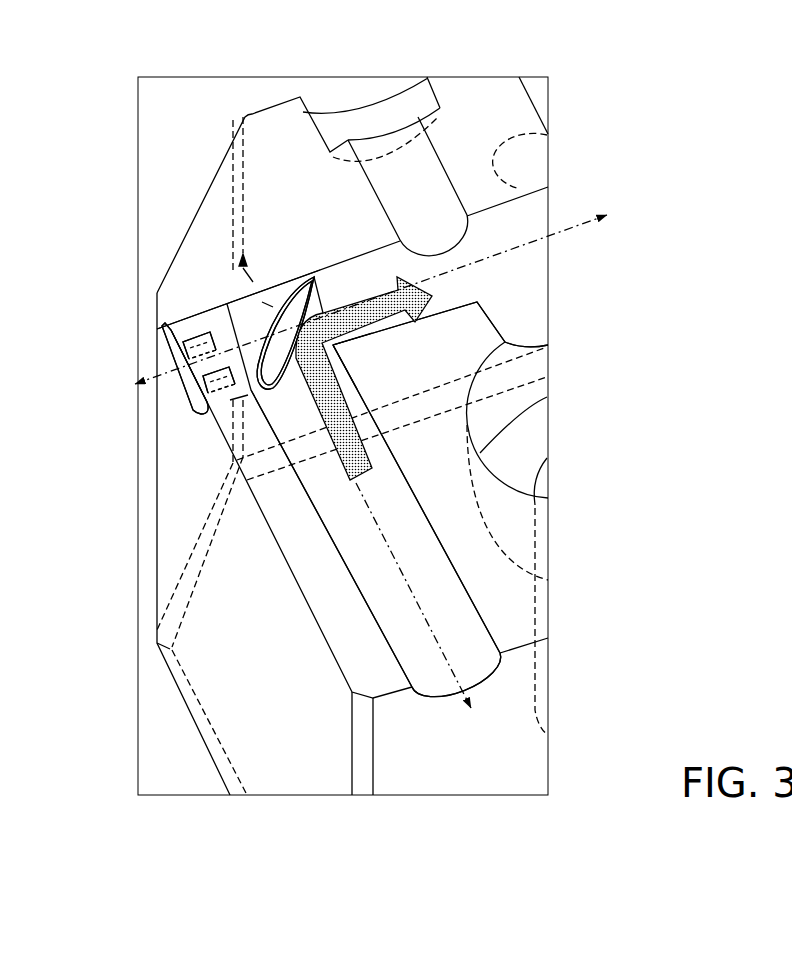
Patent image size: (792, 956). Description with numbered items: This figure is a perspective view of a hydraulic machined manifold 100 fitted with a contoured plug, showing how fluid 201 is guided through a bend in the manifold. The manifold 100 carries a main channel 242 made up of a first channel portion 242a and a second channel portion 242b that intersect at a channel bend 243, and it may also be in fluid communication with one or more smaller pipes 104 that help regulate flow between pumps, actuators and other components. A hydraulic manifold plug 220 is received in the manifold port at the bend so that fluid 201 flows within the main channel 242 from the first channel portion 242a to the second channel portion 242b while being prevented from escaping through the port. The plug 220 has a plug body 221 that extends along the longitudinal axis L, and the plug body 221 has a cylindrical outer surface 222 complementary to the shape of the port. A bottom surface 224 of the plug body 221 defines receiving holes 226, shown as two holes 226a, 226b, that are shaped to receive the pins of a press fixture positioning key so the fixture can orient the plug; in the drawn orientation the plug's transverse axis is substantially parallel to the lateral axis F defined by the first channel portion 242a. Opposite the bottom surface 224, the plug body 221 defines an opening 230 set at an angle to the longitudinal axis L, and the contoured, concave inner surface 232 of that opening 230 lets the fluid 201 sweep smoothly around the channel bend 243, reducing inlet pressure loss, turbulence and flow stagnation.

The hydraulic machined manifold 100 is at (583, 56).
The smaller pipe 104 is at (370, 122).
The fluid 201 is at (416, 310).
The hydraulic manifold plug 220 is at (188, 325).
The plug body 221 is at (294, 284).
The outer surface 222 is at (277, 300).
The bottom surface 224 is at (203, 408).
The receiving hole 226 is at (184, 352).
The first receiving hole 226a is at (145, 346).
The second receiving hole 226b is at (203, 405).
The opening 230 is at (272, 394).
The inner surface 232 is at (277, 361).
The main channel 242 is at (430, 686).
The first channel portion 242a is at (376, 556).
The second channel portion 242b is at (532, 251).
The channel bend 243 is at (336, 345).
The longitudinal axis L is at (378, 295).
The lateral axis F is at (424, 604).